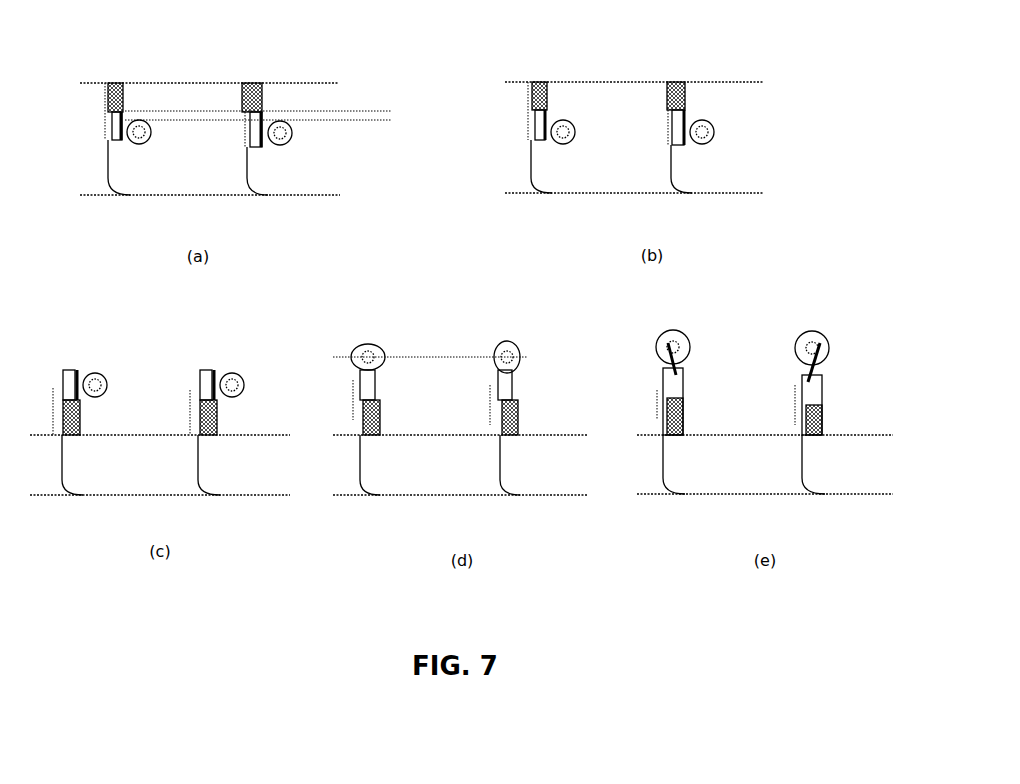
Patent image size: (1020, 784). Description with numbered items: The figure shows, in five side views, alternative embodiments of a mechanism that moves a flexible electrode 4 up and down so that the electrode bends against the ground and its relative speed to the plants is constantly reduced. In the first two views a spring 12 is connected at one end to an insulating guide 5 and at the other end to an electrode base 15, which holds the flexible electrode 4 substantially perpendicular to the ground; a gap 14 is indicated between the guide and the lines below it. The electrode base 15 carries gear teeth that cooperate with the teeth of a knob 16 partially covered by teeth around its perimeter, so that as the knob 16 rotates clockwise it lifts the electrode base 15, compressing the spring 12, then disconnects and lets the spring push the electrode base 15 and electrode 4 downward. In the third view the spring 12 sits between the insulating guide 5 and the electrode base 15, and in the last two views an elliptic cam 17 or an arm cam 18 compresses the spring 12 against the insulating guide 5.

The flexible electrode 4 is at (126, 178).
The insulating guide 5 is at (346, 82).
The spring 12 is at (138, 98).
The gap 14 is at (390, 109).
The electrode base 15 is at (266, 148).
The knob 16 is at (306, 128).
The elliptic cam 17 is at (524, 340).
The arm cam 18 is at (816, 327).